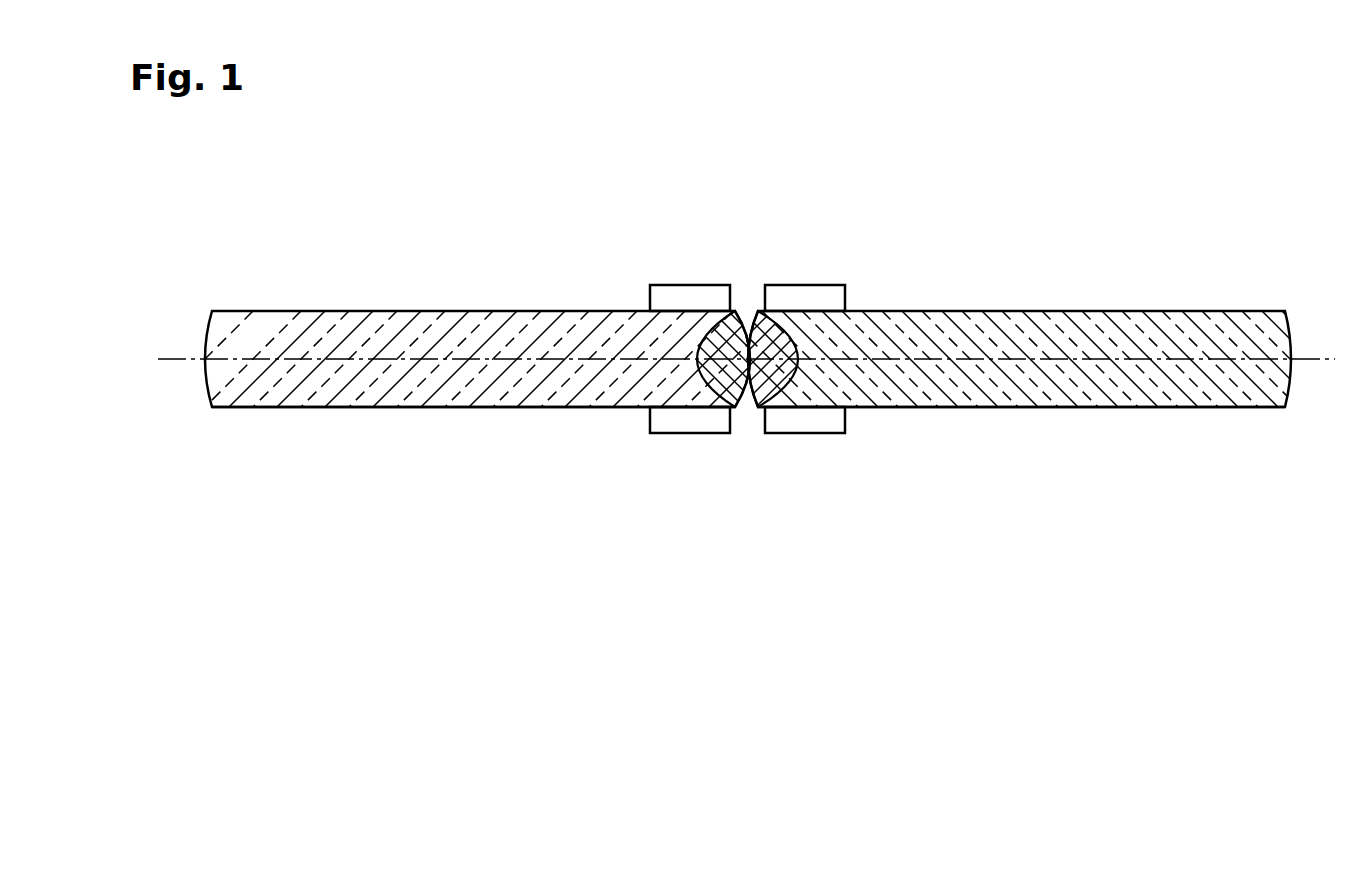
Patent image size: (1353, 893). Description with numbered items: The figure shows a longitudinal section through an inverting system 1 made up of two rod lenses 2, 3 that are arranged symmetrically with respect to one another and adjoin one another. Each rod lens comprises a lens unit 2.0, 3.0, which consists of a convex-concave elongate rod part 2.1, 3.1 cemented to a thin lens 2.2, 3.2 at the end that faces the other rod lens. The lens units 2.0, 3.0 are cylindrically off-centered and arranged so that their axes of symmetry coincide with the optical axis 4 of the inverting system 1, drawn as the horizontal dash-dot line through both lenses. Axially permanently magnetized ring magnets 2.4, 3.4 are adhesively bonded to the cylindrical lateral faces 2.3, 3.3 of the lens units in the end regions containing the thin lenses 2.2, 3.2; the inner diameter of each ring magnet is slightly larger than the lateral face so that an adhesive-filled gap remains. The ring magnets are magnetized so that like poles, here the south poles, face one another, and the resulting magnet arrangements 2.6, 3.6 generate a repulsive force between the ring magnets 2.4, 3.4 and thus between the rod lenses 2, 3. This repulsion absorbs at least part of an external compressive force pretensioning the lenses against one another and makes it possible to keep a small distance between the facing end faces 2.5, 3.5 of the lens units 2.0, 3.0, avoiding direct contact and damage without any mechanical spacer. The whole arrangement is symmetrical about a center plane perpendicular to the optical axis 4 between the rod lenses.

The inverting system 1 is at (748, 135).
The rod lens 2 is at (430, 245).
The lens unit 2.0 is at (498, 272).
The convex-concave elongate rod part 2.1 is at (327, 388).
The thin lens 2.2 is at (735, 410).
The cylindrical lateral face 2.3 is at (455, 407).
The ring magnet 2.4 is at (680, 422).
The end face 2.5 is at (752, 340).
The magnet arrangement 2.6 is at (653, 245).
The rod lens 3 is at (1067, 245).
The lens unit 3.0 is at (992, 272).
The convex-concave elongate rod part 3.1 is at (1170, 388).
The thin lens 3.2 is at (757, 410).
The cylindrical lateral face 3.3 is at (1033, 415).
The ring magnet 3.4 is at (812, 422).
The end face 3.5 is at (764, 340).
The magnet arrangement 3.6 is at (847, 245).
The optical axis 4 is at (195, 362).